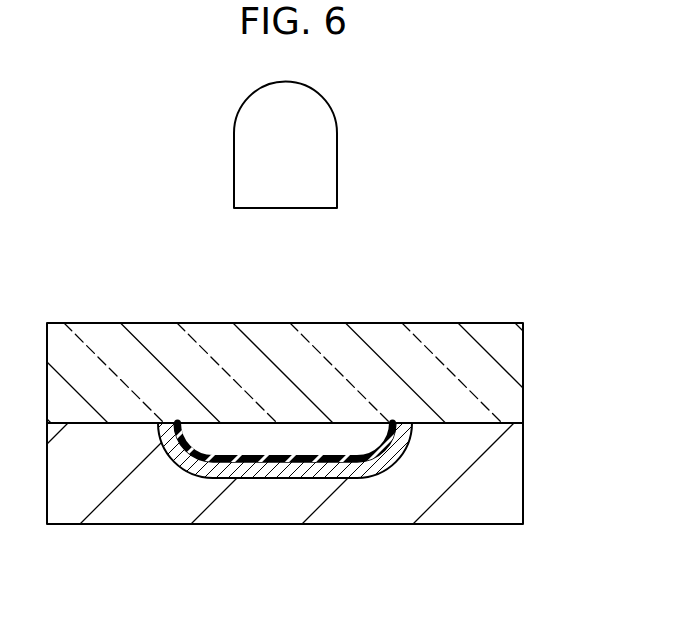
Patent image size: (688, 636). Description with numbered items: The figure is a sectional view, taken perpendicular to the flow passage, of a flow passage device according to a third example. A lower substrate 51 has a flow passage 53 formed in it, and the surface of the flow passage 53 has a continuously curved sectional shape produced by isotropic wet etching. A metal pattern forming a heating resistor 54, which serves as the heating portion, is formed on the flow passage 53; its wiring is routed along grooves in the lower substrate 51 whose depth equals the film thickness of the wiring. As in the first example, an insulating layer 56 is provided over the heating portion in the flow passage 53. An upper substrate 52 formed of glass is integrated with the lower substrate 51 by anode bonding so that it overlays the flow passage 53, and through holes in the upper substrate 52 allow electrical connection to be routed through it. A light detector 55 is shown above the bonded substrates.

The lower substrate 51 is at (496, 480).
The upper substrate 52 is at (430, 336).
The flow passage 53 is at (236, 423).
The heating resistor 54 is at (283, 470).
The light detector 55 is at (318, 153).
The insulating layer 56 is at (363, 461).